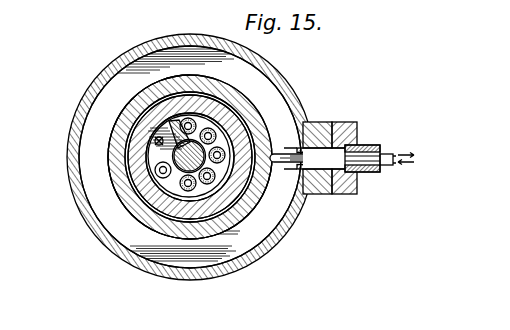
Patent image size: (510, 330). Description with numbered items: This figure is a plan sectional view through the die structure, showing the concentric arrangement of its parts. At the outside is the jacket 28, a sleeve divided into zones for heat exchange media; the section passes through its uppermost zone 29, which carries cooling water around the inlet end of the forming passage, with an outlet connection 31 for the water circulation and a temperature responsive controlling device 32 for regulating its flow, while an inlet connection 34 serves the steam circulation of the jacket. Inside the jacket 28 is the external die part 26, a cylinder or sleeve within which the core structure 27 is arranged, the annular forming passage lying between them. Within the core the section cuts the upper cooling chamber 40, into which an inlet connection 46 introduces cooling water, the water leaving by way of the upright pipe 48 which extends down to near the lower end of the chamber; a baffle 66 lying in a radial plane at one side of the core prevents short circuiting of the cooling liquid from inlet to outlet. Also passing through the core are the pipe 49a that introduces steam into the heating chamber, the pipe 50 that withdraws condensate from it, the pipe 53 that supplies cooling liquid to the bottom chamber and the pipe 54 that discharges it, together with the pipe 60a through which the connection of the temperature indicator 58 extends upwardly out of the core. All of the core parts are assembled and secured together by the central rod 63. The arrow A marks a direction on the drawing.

The jacket 28 is at (202, 278).
The uppermost zone 29 is at (95, 180).
The core structure 27 is at (150, 85).
The external die part 26 is at (118, 157).
The baffle 66 is at (112, 112).
The pipe 54 is at (140, 213).
The pipe 53 is at (240, 222).
The pipe 50 is at (262, 198).
The temperature indicator 58 is at (252, 182).
The cooling chamber 40 is at (181, 187).
The upright pipe 48 is at (205, 112).
The central rod 63 is at (155, 147).
The inlet connection 46 is at (150, 139).
The pipe 49a is at (222, 123).
The pipe 60a is at (232, 140).
The temperature responsive controlling device 32 is at (303, 124).
The outlet connection 31 is at (366, 146).
The inlet connection 34 is at (382, 172).
The direction of rotation A is at (78, 228).